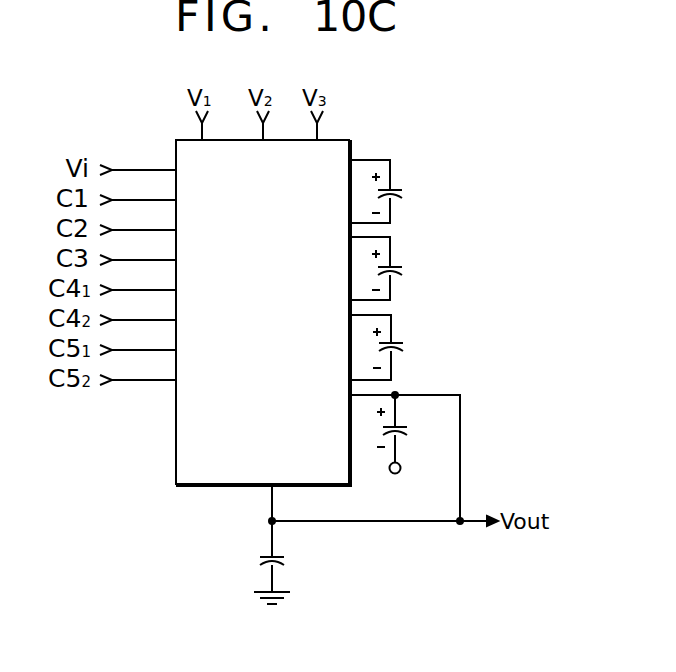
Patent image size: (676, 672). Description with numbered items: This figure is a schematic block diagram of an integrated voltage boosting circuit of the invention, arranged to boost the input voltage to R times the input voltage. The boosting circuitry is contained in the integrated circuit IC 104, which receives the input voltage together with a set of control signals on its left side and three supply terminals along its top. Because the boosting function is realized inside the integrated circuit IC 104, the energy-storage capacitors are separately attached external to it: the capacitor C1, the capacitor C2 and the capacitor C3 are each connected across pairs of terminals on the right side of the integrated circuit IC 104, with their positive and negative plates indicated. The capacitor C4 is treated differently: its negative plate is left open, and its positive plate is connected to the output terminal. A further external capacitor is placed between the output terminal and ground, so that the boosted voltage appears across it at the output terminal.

The integrated circuit IC 104 is at (213, 488).
The capacitor C1 is at (392, 191).
The capacitor C2 is at (392, 268).
The capacitor C3 is at (392, 347).
The capacitor C4 is at (405, 456).